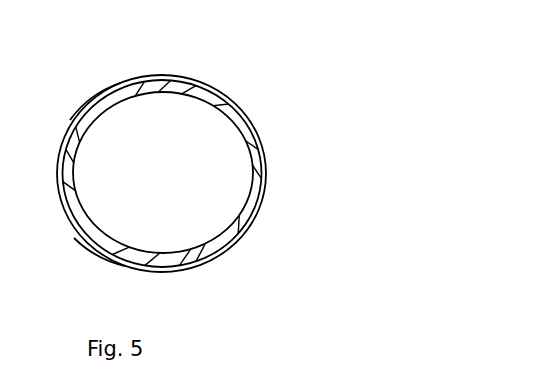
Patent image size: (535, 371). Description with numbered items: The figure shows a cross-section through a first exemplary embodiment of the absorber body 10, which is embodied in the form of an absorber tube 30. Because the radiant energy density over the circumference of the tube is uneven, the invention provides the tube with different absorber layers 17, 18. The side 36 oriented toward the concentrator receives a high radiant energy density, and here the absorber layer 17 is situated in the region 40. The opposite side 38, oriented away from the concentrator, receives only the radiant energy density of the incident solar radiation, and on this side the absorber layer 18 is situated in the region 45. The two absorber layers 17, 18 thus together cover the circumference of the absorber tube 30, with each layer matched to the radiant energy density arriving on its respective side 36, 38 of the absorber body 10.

The absorber body 10 is at (253, 173).
The absorber tube 30 is at (291, 150).
The absorber layer 18 is at (216, 150).
The region 45 is at (251, 94).
The absorber layer 17 is at (217, 186).
The region 40 is at (250, 244).
The side oriented away from the concentrator 38 is at (81, 91).
The side oriented toward the concentrator 36 is at (90, 268).